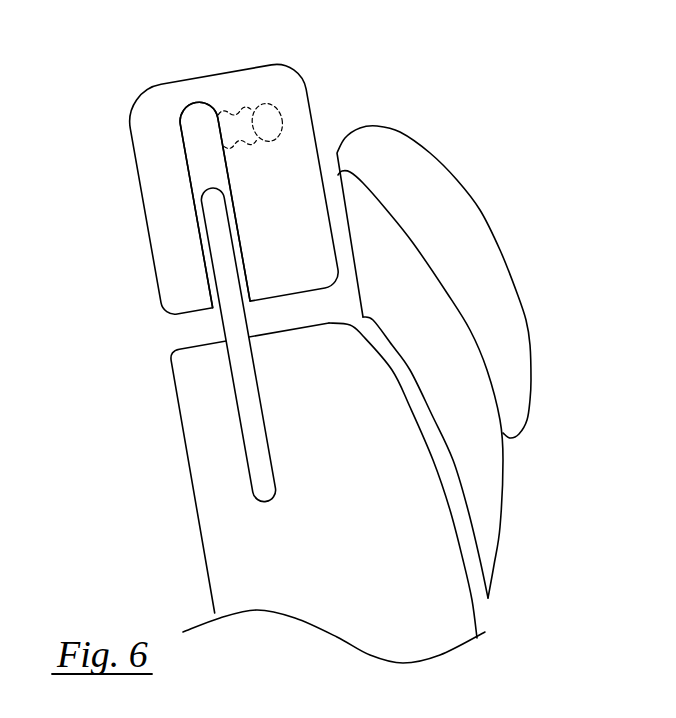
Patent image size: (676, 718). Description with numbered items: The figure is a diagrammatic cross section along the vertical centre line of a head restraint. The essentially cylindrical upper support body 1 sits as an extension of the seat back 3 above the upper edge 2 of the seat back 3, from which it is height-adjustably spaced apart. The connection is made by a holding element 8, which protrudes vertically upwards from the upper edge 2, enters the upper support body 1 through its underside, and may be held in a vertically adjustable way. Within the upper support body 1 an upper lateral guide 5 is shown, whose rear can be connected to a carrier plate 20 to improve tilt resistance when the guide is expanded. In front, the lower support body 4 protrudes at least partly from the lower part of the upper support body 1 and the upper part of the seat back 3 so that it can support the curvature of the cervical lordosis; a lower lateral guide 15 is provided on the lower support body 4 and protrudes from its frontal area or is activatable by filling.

The upper support body 1 is at (145, 123).
The carrier plate 20 is at (200, 165).
The upper lateral guide 5 is at (273, 117).
The holding element 8 is at (213, 263).
The upper edge of the seat back 2 is at (207, 347).
The seat back 3 is at (238, 567).
The lower support body 4 is at (482, 467).
The lower lateral guide 15 is at (455, 220).